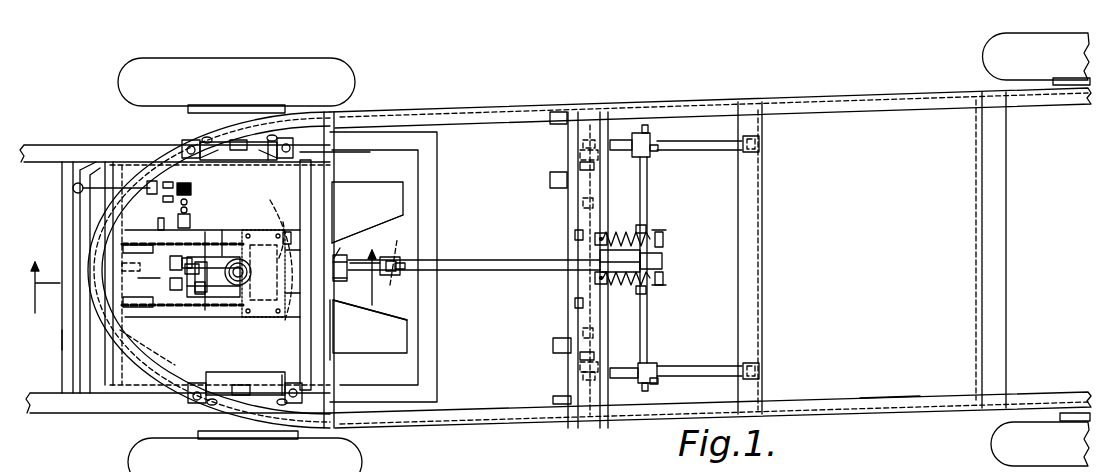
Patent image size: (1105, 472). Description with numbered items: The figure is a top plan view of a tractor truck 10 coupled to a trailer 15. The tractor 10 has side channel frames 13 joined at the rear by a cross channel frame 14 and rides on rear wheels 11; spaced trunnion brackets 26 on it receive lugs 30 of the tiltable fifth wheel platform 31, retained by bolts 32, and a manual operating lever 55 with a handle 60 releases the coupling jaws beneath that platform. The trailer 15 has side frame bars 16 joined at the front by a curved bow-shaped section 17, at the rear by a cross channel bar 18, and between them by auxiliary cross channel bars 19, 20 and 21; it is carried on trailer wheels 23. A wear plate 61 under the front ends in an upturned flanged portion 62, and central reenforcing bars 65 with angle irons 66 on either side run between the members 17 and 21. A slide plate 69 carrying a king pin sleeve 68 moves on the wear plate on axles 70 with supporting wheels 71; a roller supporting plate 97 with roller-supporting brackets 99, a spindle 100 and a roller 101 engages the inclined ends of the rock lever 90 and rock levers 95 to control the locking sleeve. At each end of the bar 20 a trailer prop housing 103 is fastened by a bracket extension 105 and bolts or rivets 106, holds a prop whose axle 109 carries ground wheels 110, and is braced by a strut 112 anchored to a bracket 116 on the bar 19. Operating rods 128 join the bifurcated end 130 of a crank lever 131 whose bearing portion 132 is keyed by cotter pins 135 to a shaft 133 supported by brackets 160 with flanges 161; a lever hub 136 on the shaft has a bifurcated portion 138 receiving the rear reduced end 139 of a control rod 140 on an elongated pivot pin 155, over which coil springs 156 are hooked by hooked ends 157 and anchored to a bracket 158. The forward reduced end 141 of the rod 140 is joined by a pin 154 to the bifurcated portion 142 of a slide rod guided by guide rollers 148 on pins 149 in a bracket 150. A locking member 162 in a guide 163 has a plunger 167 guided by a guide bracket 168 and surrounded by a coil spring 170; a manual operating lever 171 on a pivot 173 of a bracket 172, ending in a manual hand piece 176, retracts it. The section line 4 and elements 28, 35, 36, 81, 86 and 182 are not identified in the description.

The section line 4 is at (206, 269).
The tractor truck 10 is at (437, 367).
The rear wheels 11 is at (353, 85).
The side channel frames 13 is at (49, 145).
The cross channel frame 14 is at (430, 196).
The trailer 15 is at (887, 396).
The side frame bars 16 is at (836, 99).
The curved bow-shaped section 17 is at (128, 365).
The cross channel bar 18 is at (1003, 278).
The auxiliary cross channel bar 19 is at (763, 303).
The transverse chassis frame bar 20 is at (578, 314).
The transverse frame bar 21 is at (329, 340).
The trailer wheels 23 is at (985, 62).
The trunnion brackets 26 is at (268, 140).
The bearing 28 is at (244, 271).
The lugs 30 is at (300, 154).
The tiltable fifth wheel platform 31 is at (165, 345).
The bolts 32 is at (237, 140).
The panel 35 is at (376, 182).
The slanted edge 36 is at (365, 232).
The manual operating lever 55 is at (140, 279).
The handle 60 is at (122, 267).
The wear plate 61 is at (107, 378).
The upturned flanged portion 62 is at (72, 340).
The central reenforcing bars 65 is at (135, 227).
The angle irons 66 is at (300, 235).
The king pin sleeve 68 is at (223, 238).
The slide plate 69 is at (195, 288).
The axles 70 is at (186, 268).
The supporting wheels 71 is at (208, 248).
The bracket 81 is at (170, 262).
The pulley 86 is at (240, 258).
The rock lever 90 is at (226, 298).
The rock levers 95 is at (284, 318).
The roller supporting plate 97 is at (258, 320).
The roller-supporting brackets 99 is at (272, 318).
The spindle 100 is at (272, 256).
The roller 101 is at (283, 234).
The trailer prop housing 103 is at (603, 118).
The bracket extension 105 is at (580, 155).
The bolts or rivets 106 is at (580, 166).
The axle 109 is at (583, 203).
The ground wheels 110 is at (550, 124).
The strut 112 is at (703, 141).
The bracket 116 is at (760, 144).
The operating rods 128 is at (583, 144).
The bifurcated end 130 is at (619, 150).
The crank lever 131 is at (645, 157).
The bearing portion 132 is at (657, 368).
The shaft 133 is at (648, 195).
The cotter pins 135 is at (658, 148).
The lever hub 136 is at (663, 268).
The bifurcated portion 138 is at (665, 253).
The rear reduced end 139 is at (665, 260).
The control rod 140 is at (480, 271).
The reduced end 141 is at (402, 275).
The bifurcated portion 142 is at (405, 282).
The guide rollers 148 is at (348, 247).
The pins 149 is at (372, 280).
The bracket 150 is at (340, 281).
The pin 154 is at (399, 253).
The elongated pivot pin 155 is at (667, 237).
The coil springs 156 is at (622, 238).
The hooked ends 157 is at (663, 232).
The bracket 158 is at (596, 236).
The brackets 160 is at (641, 225).
The flanges 161 is at (575, 234).
The locking member 162 is at (185, 270).
The guide 163 is at (190, 221).
The plunger 167 is at (163, 222).
The guide bracket 168 is at (191, 189).
The coil spring 170 is at (188, 206).
The manual operating lever 171 is at (108, 147).
The bracket 172 is at (163, 186).
The pivot 173 is at (163, 200).
The manual hand piece 176 is at (72, 188).
The block 182 is at (650, 137).